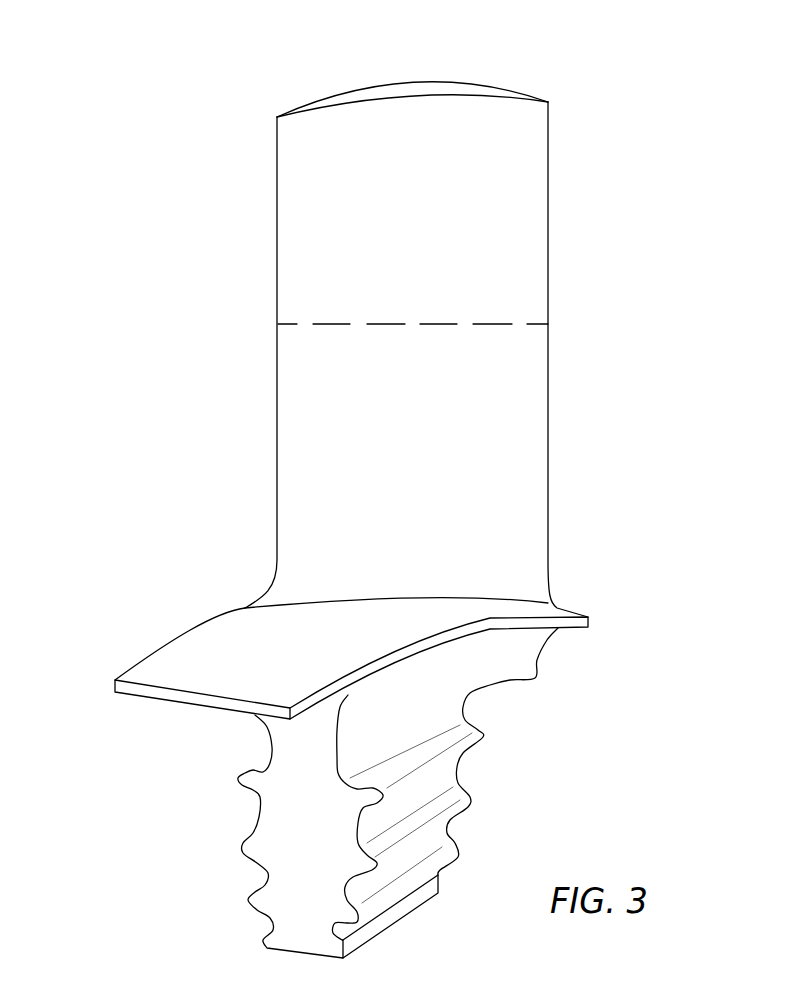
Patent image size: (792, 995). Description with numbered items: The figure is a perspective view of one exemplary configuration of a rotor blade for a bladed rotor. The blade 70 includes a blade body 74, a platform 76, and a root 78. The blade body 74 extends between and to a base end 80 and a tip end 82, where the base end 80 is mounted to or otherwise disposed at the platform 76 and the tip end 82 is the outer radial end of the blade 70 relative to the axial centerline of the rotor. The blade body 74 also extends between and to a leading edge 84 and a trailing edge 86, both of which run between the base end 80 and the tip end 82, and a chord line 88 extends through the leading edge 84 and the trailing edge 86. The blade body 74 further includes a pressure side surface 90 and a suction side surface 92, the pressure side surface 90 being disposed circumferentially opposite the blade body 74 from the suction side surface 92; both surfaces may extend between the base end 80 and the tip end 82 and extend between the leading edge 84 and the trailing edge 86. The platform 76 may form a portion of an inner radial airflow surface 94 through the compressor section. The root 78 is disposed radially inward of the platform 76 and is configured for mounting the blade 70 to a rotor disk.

The blade 70 is at (615, 178).
The blade body 74 is at (570, 378).
The platform 76 is at (618, 617).
The root 78 is at (487, 762).
The base end 80 is at (312, 610).
The tip end 82 is at (443, 92).
The leading edge 84 is at (277, 212).
The trailing edge 86 is at (548, 250).
The chord line 88 is at (437, 325).
The pressure side surface 90 is at (512, 507).
The suction side surface 92 is at (345, 87).
The inner radial airflow surface 94 is at (207, 647).